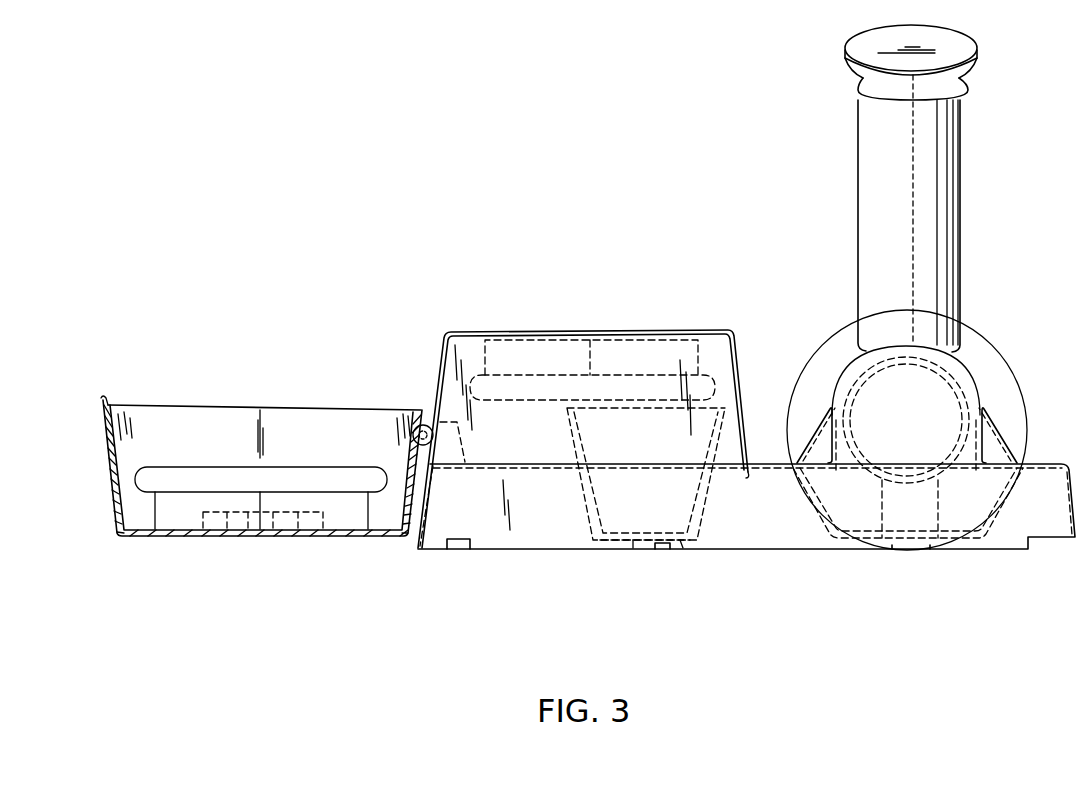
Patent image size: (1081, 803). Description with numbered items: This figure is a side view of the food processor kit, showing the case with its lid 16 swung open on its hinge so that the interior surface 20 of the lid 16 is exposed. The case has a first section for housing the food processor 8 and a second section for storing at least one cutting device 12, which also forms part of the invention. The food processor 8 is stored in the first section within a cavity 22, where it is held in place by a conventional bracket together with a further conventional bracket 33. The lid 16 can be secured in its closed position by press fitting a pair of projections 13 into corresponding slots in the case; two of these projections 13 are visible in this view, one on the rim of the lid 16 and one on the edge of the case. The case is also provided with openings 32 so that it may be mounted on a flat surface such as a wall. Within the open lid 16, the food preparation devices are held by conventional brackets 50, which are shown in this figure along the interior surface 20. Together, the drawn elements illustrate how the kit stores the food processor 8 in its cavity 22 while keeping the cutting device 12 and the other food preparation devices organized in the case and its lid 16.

The food processor 8 is at (988, 266).
The cutting device 12 is at (700, 508).
The projections 13 is at (103, 398).
The lid 16 is at (490, 330).
The interior surface 20 is at (147, 537).
The cavity 22 is at (990, 533).
The openings 32 is at (633, 549).
The bracket 33 is at (1000, 437).
The brackets 50 is at (215, 537).